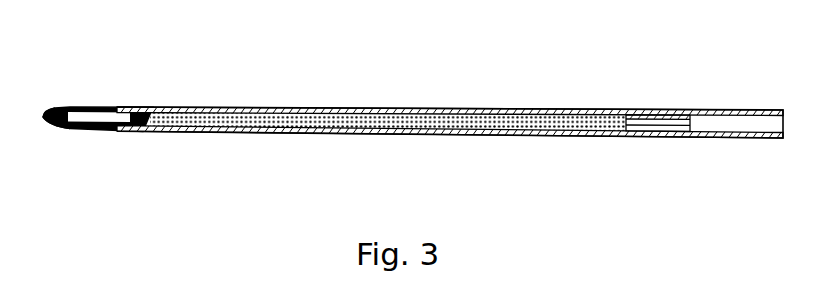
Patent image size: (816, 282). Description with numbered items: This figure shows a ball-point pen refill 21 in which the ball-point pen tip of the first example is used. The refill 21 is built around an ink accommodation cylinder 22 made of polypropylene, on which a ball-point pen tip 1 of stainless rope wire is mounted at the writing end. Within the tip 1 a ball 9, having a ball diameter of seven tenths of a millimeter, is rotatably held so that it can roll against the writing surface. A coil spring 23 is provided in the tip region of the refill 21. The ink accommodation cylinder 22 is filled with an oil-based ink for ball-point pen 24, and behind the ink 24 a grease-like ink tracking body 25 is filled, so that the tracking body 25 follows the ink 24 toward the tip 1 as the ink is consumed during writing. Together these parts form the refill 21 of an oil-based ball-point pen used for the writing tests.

The ball-point pen tip 1 is at (90, 105).
The ball 9 is at (47, 122).
The ball-point pen refill 21 is at (433, 105).
The ink accommodation cylinder 22 is at (315, 107).
The coil spring 23 is at (62, 112).
The ink for ball-point pen 24 is at (565, 108).
The ink tracking body 25 is at (663, 127).